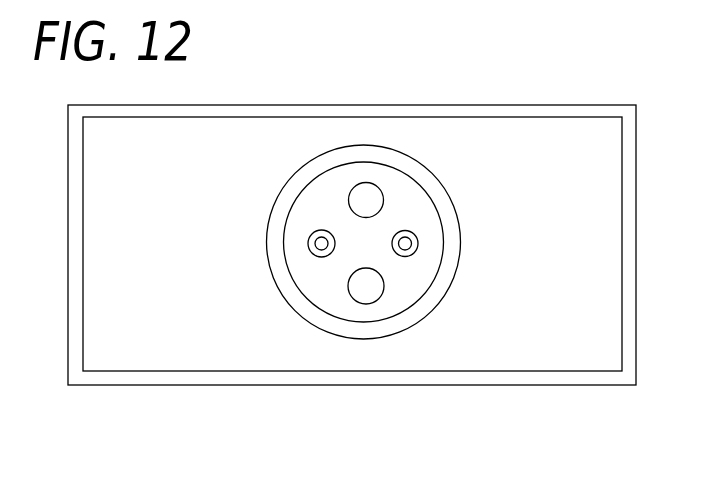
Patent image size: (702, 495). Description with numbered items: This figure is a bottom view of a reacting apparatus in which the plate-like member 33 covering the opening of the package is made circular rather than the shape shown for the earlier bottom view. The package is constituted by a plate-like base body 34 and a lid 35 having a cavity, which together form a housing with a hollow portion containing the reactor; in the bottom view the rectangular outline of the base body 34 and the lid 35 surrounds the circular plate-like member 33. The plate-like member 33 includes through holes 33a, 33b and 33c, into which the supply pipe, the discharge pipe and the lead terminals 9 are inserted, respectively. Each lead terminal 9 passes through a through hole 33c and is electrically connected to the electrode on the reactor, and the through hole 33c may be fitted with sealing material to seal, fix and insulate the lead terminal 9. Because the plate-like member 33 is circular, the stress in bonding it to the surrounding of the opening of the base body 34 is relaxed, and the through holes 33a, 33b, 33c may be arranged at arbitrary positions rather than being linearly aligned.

The lead terminal 9 is at (317, 245).
The plate-like member 33 is at (445, 265).
The through hole 33a is at (364, 284).
The through hole 33b is at (366, 200).
The through hole 33c is at (410, 258).
The base body 34 is at (558, 117).
The lid 35 is at (614, 106).